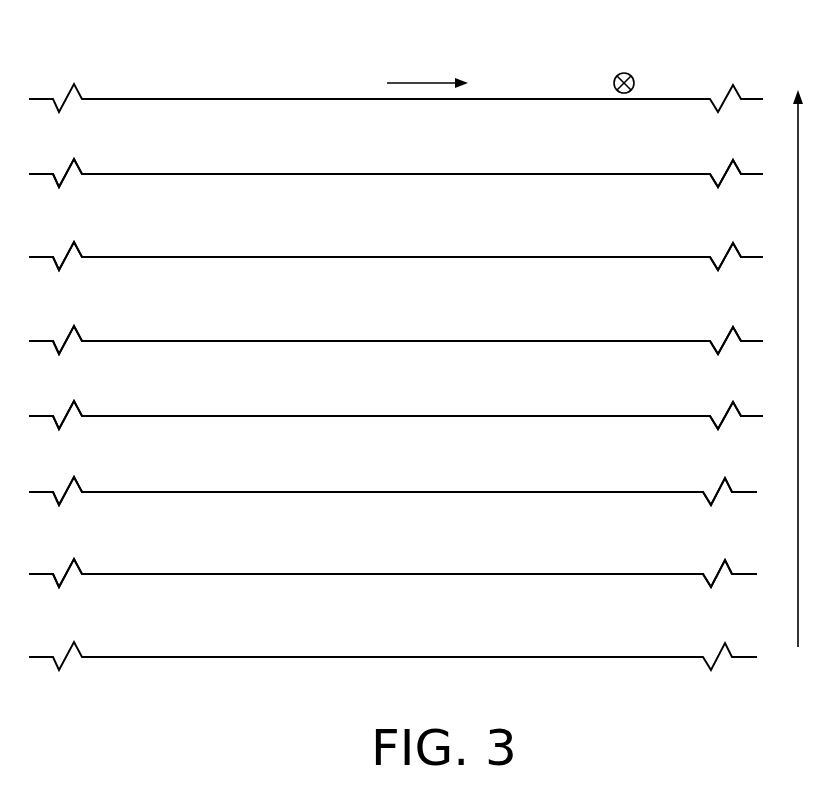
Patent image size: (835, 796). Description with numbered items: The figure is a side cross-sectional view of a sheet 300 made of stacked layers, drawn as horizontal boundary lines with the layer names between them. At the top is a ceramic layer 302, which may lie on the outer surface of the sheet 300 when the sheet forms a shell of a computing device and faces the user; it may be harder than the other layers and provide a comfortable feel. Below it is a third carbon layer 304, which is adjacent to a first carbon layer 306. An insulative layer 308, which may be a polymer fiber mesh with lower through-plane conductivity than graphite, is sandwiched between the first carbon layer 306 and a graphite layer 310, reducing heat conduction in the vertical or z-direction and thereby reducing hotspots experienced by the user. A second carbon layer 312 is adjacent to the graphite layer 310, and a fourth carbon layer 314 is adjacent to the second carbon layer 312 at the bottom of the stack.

The sheet 300 is at (171, 76).
The ceramic layer 302 is at (510, 145).
The third carbon layer 304 is at (504, 225).
The first carbon layer 306 is at (504, 310).
The insulative layer 308 is at (525, 388).
The graphite layer 310 is at (521, 466).
The second carbon layer 312 is at (511, 545).
The fourth carbon layer 314 is at (509, 626).